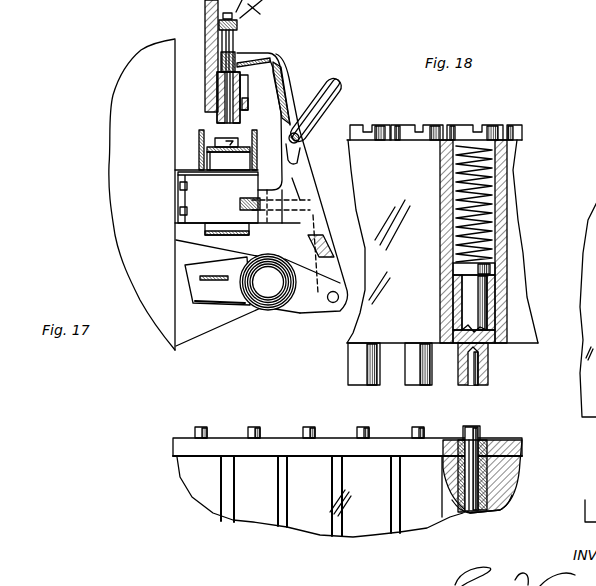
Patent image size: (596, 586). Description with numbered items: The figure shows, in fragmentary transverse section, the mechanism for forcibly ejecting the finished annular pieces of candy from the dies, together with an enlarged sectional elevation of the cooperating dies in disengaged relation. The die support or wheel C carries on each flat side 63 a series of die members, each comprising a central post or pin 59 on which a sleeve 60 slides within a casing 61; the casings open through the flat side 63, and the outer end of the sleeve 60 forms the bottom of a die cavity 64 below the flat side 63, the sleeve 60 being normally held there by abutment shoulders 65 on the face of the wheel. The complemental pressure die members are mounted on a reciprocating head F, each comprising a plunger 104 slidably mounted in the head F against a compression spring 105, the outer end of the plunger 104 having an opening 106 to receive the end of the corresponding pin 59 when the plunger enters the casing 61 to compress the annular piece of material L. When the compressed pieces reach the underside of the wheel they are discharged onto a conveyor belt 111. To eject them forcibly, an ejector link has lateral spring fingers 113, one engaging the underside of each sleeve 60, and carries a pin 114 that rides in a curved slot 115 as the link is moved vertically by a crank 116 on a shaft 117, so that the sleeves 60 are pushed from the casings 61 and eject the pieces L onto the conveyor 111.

In FIG. 17, the abutment shoulders 65 is at (217, 40).
In FIG. 17, the central post or pin 59 is at (236, 43).
In FIG. 18, the central post or pin 59 is at (413, 434).
In FIG. 17, the sleeve 60 is at (247, 88).
In FIG. 18, the sleeve 60 is at (501, 507).
In FIG. 17, the casing 61 is at (248, 107).
In FIG. 18, the casing 61 is at (493, 480).
In FIG. 17, the lateral spring fingers 113 is at (243, 61).
In FIG. 17, the curved slot 115 is at (321, 98).
In FIG. 17, the pin 114 is at (300, 133).
In FIG. 17, the annular piece of material L is at (238, 139).
In FIG. 18, the annular piece of material L is at (462, 438).
In FIG. 17, the conveyor belt 111 is at (242, 237).
In FIG. 17, the crank 116 is at (309, 302).
In FIG. 17, the shaft 117 is at (268, 284).
In FIG. 18, the compression spring 105 is at (500, 169).
In FIG. 18, the reciprocating head F is at (523, 228).
In FIG. 18, the plunger 104 is at (478, 305).
In FIG. 18, the opening 106 is at (481, 368).
In FIG. 18, the die support or wheel C is at (166, 446).
In FIG. 18, the flat side 63 is at (328, 438).
In FIG. 18, the die cavity 64 is at (484, 447).